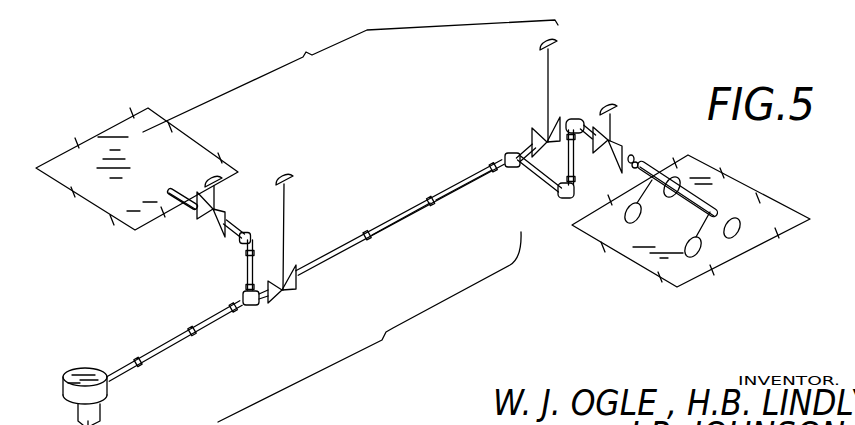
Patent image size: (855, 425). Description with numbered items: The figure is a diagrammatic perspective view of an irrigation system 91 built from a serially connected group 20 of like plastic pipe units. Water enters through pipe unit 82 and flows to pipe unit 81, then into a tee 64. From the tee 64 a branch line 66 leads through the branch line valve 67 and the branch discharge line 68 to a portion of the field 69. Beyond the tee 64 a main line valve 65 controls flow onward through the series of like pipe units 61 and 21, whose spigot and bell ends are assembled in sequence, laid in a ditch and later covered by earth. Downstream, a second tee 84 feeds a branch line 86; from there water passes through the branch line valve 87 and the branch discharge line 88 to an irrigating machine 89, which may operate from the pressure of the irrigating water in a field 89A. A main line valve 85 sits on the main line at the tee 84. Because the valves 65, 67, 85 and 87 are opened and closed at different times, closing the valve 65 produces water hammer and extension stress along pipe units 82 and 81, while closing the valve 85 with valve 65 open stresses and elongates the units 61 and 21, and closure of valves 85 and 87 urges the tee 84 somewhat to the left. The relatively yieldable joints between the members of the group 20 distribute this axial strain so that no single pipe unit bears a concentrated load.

The serially connected group of plastic pipe units 20 is at (369, 327).
The pipe unit 21 is at (416, 215).
The pipe unit 61 is at (351, 250).
The tee 64 is at (251, 303).
The main line valve 65 is at (288, 270).
The branch line 66 is at (245, 263).
The branch line valve 67 is at (226, 209).
The branch discharge line 68 is at (180, 192).
The field portion 69 is at (172, 163).
The pipe unit 81 is at (187, 338).
The pipe unit 82 is at (136, 366).
The tee 84 is at (513, 162).
The main line valve 85 is at (553, 128).
The branch line 86 is at (571, 186).
The branch line valve 87 is at (614, 130).
The branch discharge line 88 is at (641, 152).
The irrigating machine 89 is at (715, 205).
The field 89A is at (765, 223).
The irrigation system 91 is at (483, 205).